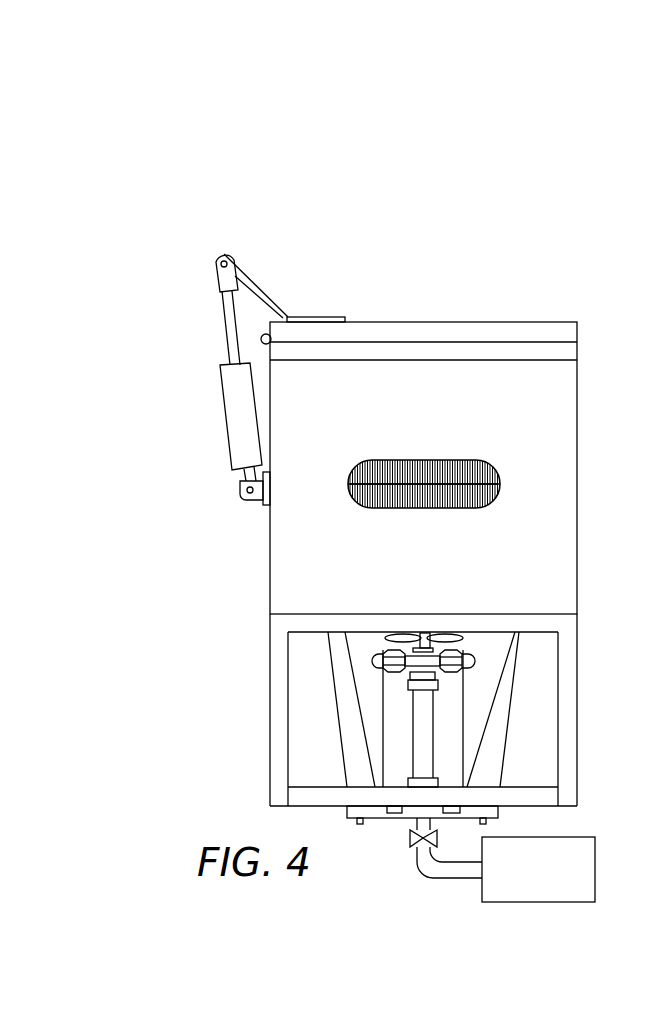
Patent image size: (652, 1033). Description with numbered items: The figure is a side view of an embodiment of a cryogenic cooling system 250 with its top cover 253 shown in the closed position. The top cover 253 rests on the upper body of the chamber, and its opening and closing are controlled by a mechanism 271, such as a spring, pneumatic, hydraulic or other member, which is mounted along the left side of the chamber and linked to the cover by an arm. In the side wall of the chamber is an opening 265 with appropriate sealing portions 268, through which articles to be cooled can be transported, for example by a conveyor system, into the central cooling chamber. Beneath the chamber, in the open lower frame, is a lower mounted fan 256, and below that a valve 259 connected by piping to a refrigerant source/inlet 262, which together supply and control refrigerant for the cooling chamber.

The cooling system 250 is at (393, 275).
The top cover 253 is at (490, 322).
The lower mounted fan 256 is at (400, 633).
The valve 259 is at (410, 837).
The refrigerant source/inlet 262 is at (595, 870).
The opening 265 is at (465, 462).
The sealing portions 268 is at (372, 478).
The mechanism 271 is at (232, 432).